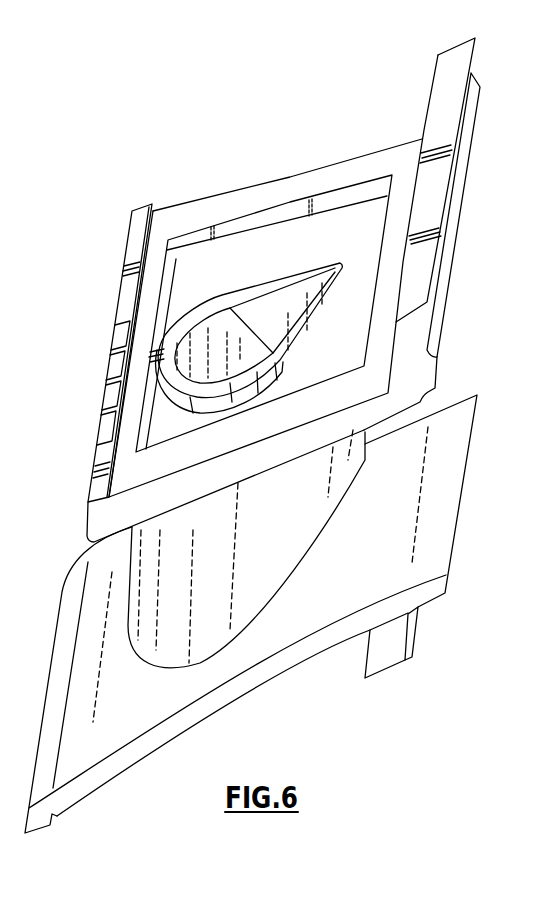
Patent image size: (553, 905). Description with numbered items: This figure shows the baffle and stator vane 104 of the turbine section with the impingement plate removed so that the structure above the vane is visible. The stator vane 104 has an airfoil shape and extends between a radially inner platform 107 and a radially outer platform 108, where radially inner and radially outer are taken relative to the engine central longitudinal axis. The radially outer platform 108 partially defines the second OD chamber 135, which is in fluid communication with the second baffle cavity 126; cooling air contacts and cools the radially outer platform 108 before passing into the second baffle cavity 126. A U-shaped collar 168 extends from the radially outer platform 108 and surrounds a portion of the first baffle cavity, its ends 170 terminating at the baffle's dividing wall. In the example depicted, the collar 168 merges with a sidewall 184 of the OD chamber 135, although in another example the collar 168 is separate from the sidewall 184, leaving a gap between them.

The stator vane 104 is at (278, 547).
The radially inner platform 107 is at (438, 534).
The radially outer platform 108 is at (105, 525).
The second baffle cavity 126 is at (237, 330).
The second OD chamber 135 is at (376, 251).
The U-shaped collar 168 is at (175, 400).
The ends 170 is at (224, 296).
The sidewall 184 is at (147, 300).